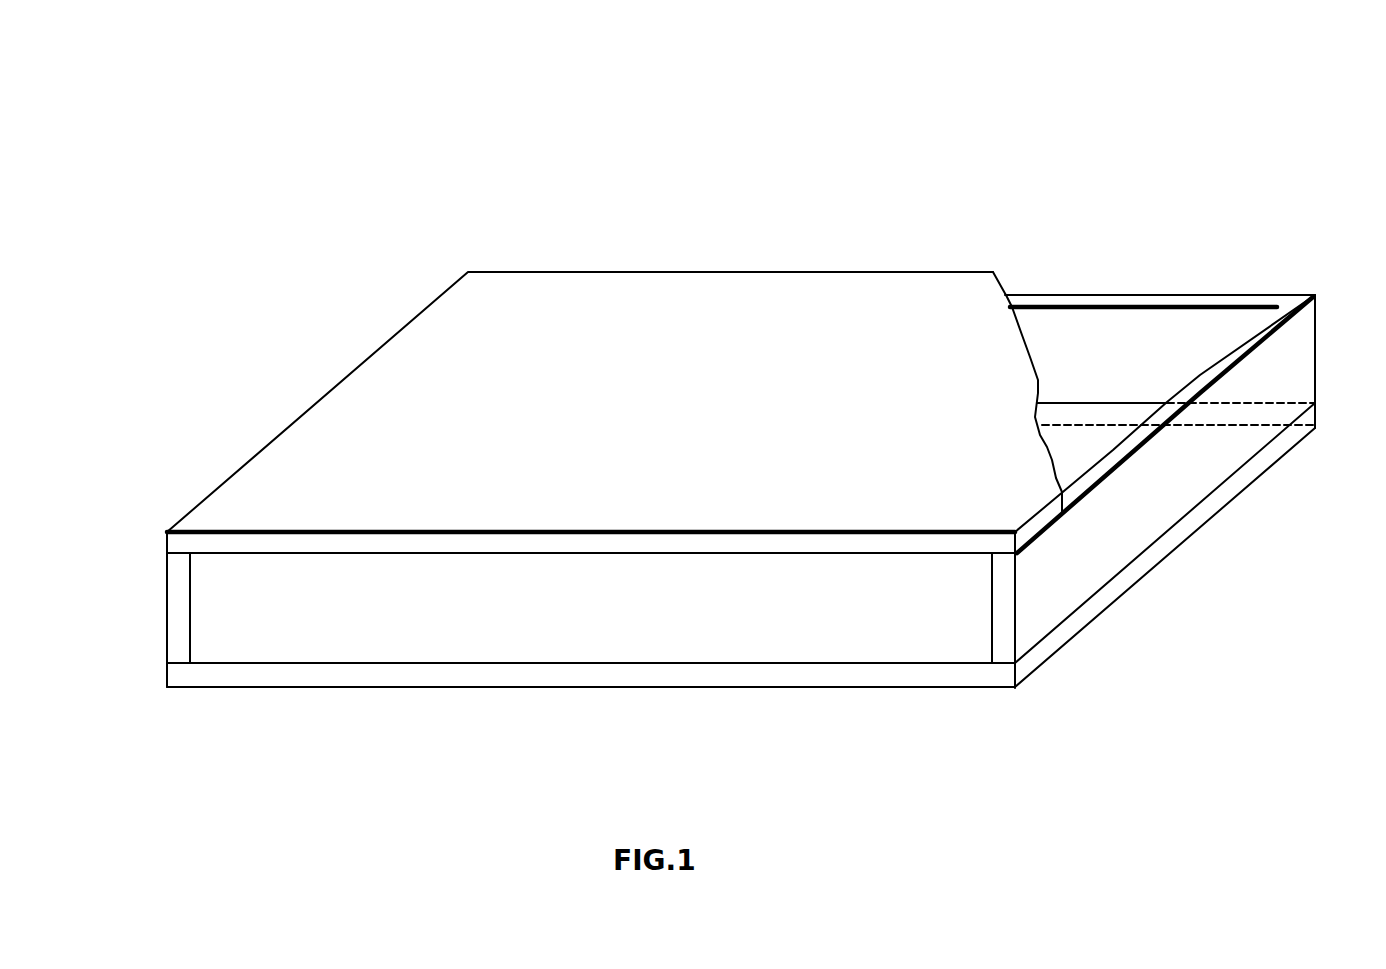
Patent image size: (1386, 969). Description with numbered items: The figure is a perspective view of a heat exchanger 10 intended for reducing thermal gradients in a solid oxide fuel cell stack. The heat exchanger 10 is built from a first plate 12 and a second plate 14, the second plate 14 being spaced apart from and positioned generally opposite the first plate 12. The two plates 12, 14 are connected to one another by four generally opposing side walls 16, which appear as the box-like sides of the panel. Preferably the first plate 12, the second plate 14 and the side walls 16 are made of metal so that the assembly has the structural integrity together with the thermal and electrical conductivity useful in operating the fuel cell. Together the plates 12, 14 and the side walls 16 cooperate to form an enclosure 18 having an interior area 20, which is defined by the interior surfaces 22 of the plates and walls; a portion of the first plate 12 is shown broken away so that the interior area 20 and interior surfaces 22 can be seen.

The heat exchanger 10 is at (738, 406).
The first plate 12 is at (614, 397).
The second plate 14 is at (352, 673).
The side walls 16 is at (1168, 325).
The enclosure 18 is at (395, 395).
The interior area 20 is at (1062, 328).
The interior surfaces 22 is at (1098, 367).